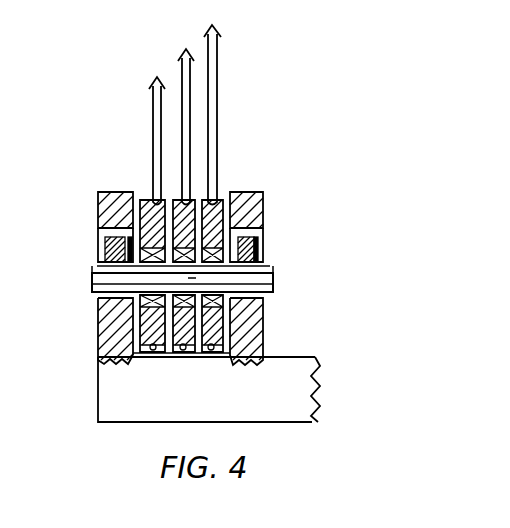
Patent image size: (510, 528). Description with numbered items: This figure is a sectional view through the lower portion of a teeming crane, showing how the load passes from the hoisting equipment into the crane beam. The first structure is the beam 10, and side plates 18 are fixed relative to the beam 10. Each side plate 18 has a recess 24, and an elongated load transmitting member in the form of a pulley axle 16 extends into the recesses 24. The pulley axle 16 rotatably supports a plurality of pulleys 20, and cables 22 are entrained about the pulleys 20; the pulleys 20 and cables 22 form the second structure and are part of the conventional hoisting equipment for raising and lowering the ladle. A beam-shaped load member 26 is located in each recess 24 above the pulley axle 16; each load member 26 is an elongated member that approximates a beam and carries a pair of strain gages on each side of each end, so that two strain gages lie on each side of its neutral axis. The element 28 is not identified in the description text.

The beam 10 is at (111, 383).
The pulley axle 16 is at (284, 280).
The side plate 18 is at (114, 186).
The pulley 20 is at (157, 198).
The cable 22 is at (214, 84).
The recess 24 is at (96, 302).
The load member 26 is at (92, 279).
The bearing 28 is at (107, 260).